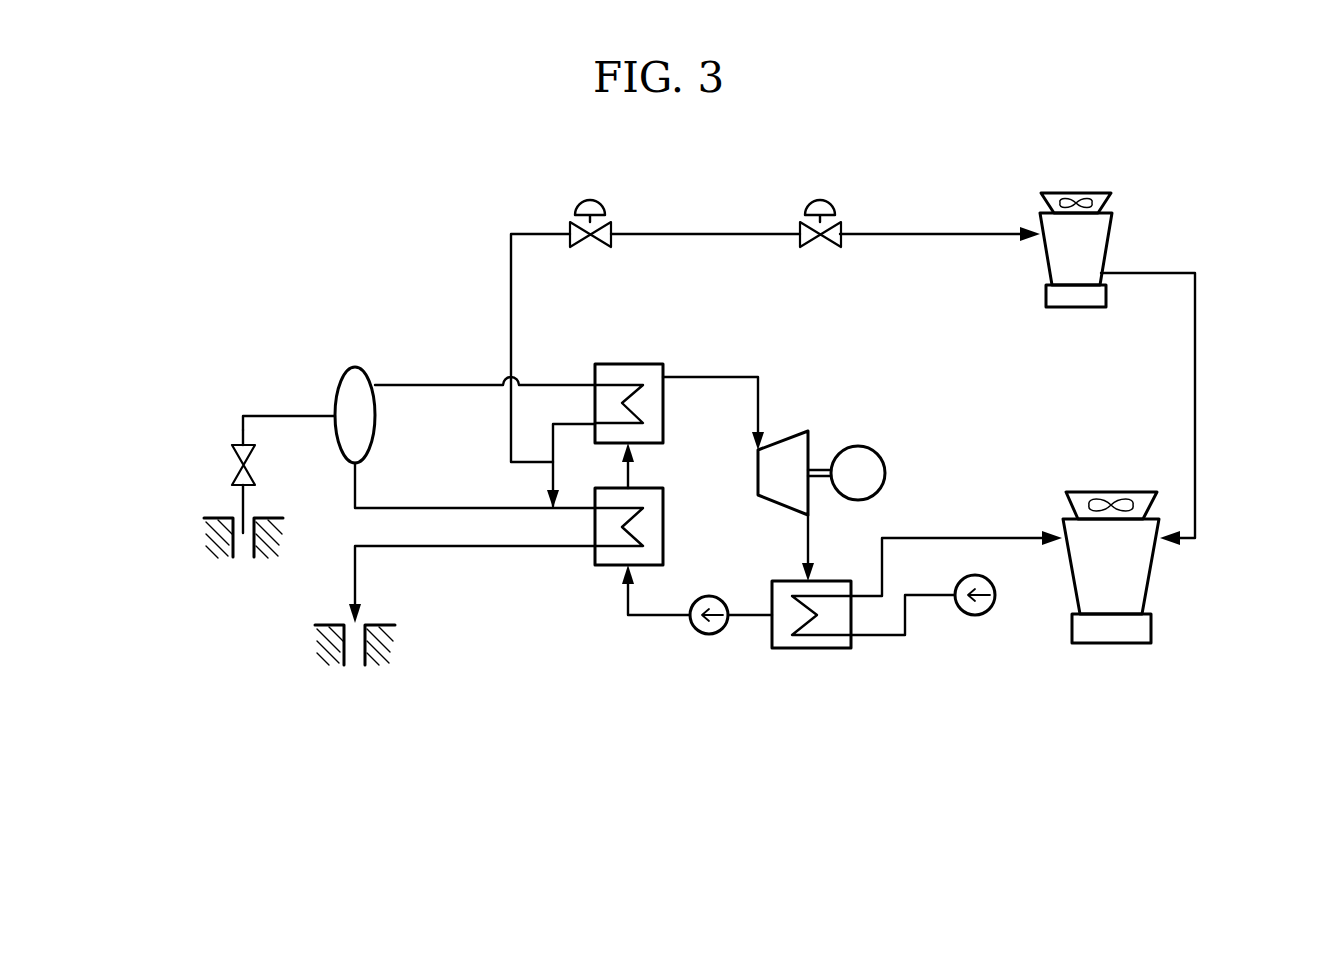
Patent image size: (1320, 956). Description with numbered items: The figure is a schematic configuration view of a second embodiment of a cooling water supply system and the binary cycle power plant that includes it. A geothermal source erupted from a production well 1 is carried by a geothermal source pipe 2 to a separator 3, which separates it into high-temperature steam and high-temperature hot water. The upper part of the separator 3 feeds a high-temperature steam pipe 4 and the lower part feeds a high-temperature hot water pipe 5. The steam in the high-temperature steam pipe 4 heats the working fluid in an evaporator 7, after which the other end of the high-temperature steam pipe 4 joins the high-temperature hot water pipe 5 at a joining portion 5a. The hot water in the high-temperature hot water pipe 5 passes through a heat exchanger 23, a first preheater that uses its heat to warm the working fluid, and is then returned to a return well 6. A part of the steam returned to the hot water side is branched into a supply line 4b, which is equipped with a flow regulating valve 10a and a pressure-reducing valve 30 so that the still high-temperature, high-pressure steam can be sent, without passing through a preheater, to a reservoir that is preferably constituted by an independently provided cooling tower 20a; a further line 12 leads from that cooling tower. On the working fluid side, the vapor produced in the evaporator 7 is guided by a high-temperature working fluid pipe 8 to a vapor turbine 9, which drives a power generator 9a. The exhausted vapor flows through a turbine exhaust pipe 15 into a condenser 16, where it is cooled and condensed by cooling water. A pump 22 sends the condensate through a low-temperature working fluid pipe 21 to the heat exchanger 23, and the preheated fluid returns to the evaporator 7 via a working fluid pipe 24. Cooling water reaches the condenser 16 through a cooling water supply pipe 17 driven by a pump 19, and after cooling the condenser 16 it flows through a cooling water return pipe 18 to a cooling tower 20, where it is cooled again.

The production well 1 is at (207, 443).
The geothermal source pipe 2 is at (292, 416).
The separator 3 is at (355, 367).
The high-temperature steam pipe 4 is at (420, 385).
The supply line 4b is at (690, 234).
The high-temperature hot water pipe 5 is at (409, 508).
The joining portion 5a is at (549, 503).
The return well 6 is at (336, 608).
The evaporator 7 is at (643, 364).
The high-temperature working fluid pipe 8 is at (715, 377).
The vapor turbine 9 is at (785, 437).
The power generator 9a is at (886, 473).
The flow regulating valve 10a is at (590, 247).
The line from bypass cooling tower 12 is at (1195, 408).
The turbine exhaust pipe 15 is at (808, 540).
The condenser 16 is at (810, 648).
The cooling water supply pipe 17 is at (885, 635).
The cooling water return pipe 18 is at (1006, 538).
The pump 19 is at (976, 615).
The cooling tower 20 is at (1155, 565).
The cooling tower 20a is at (1108, 238).
The low-temperature working fluid pipe 21 is at (628, 601).
The pump 22 is at (706, 634).
The heat exchanger 23 is at (663, 520).
The working fluid pipe 24 is at (630, 474).
The pressure-reducing valve 30 is at (820, 247).